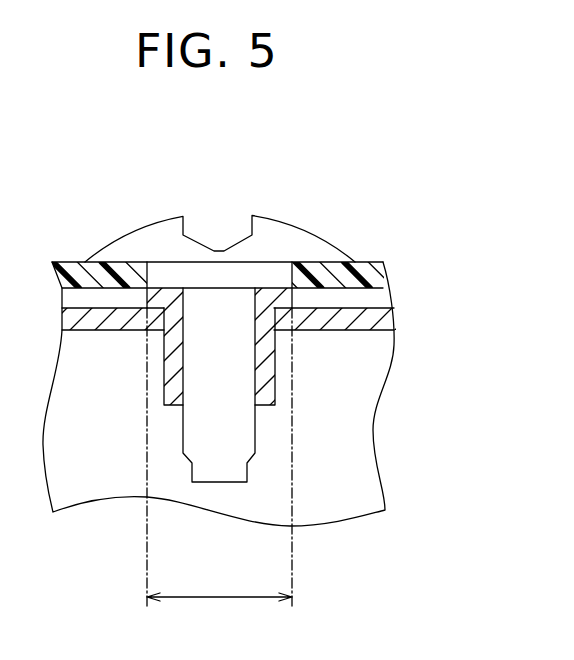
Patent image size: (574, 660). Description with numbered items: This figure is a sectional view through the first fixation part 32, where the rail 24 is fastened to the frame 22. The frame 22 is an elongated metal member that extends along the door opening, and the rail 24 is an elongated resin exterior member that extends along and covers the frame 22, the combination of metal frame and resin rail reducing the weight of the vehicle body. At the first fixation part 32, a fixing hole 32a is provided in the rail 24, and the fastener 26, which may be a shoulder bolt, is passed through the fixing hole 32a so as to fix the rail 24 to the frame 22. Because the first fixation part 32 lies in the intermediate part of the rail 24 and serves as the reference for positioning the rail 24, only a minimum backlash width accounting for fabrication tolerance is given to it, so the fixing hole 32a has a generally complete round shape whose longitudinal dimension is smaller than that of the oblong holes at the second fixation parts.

The frame 22 is at (382, 317).
The rail 24 is at (382, 279).
The fastener 26 is at (289, 236).
The first fixation part 32 is at (429, 136).
The fixing hole 32a is at (157, 268).